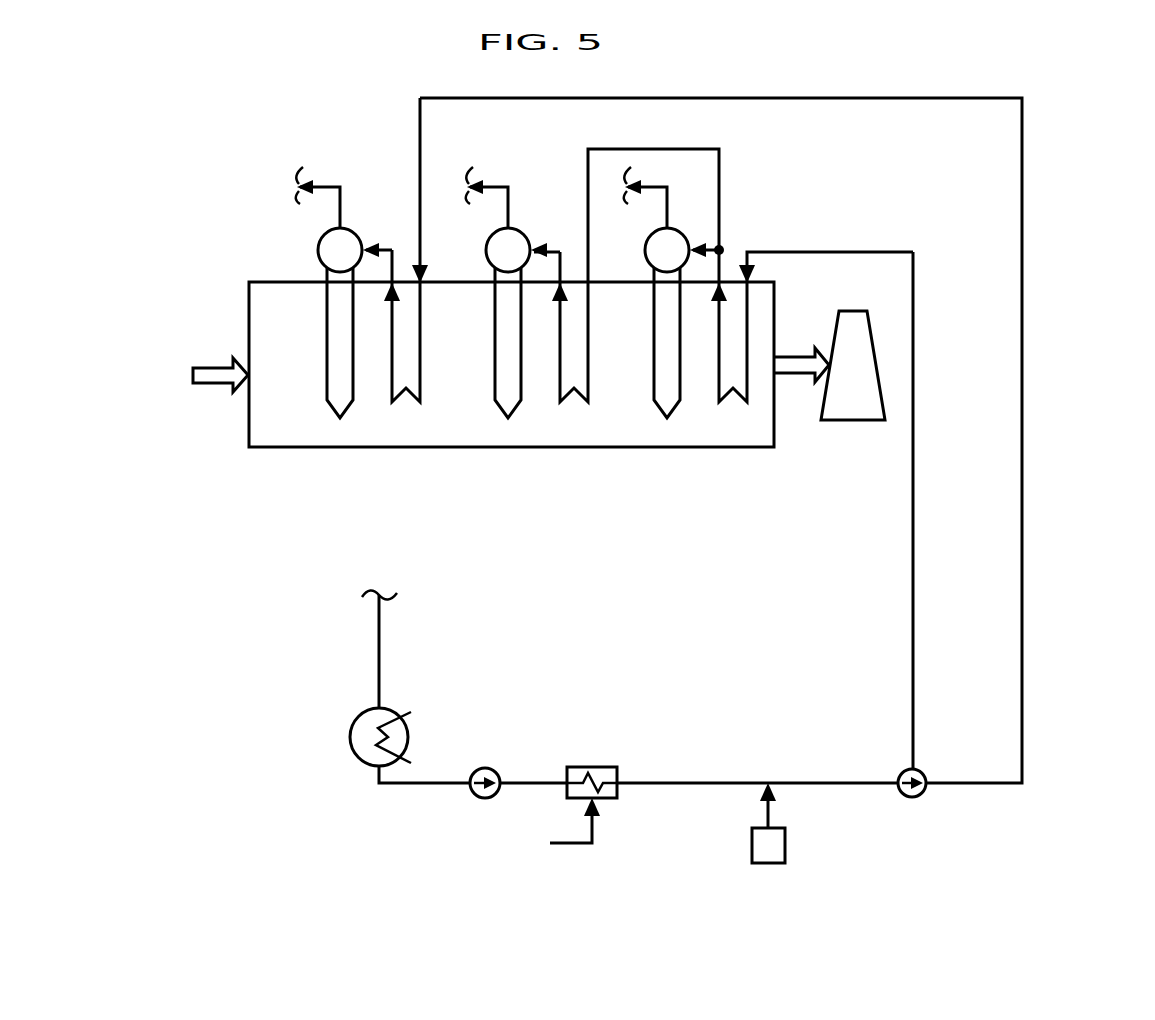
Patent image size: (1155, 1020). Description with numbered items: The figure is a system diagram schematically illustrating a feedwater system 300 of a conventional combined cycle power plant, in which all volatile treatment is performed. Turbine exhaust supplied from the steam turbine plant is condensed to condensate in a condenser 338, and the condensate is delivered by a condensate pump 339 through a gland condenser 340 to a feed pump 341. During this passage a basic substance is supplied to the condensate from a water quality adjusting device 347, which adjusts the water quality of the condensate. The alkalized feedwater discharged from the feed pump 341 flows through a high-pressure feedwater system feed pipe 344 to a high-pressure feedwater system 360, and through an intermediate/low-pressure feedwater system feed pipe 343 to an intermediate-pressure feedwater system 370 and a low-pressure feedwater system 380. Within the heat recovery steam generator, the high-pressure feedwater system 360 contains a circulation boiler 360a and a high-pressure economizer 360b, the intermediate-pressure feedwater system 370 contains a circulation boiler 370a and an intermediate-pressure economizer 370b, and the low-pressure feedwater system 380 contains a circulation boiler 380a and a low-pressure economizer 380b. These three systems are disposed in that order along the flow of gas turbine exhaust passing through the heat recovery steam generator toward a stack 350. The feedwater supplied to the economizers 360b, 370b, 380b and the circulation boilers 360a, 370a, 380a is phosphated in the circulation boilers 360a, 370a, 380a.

The feedwater system 300 is at (1103, 146).
The condenser 338 is at (367, 709).
The condensate pump 339 is at (482, 800).
The gland condenser 340 is at (608, 800).
The feed pump 341 is at (905, 769).
The intermediate/low-pressure feedwater system feed pipe 343 is at (912, 603).
The high-pressure feedwater system feed pipe 344 is at (1025, 603).
The water quality adjusting device 347 is at (770, 866).
The stack 350 is at (848, 310).
The high-pressure feedwater system 360 is at (386, 457).
The circulation boiler 360a is at (312, 293).
The high-pressure economizer 360b is at (405, 393).
The intermediate-pressure feedwater system 370 is at (544, 457).
The circulation boiler 370a is at (482, 293).
The intermediate-pressure economizer 370b is at (573, 393).
The low-pressure feedwater system 380 is at (687, 457).
The circulation boiler 380a is at (642, 293).
The low-pressure economizer 380b is at (732, 393).